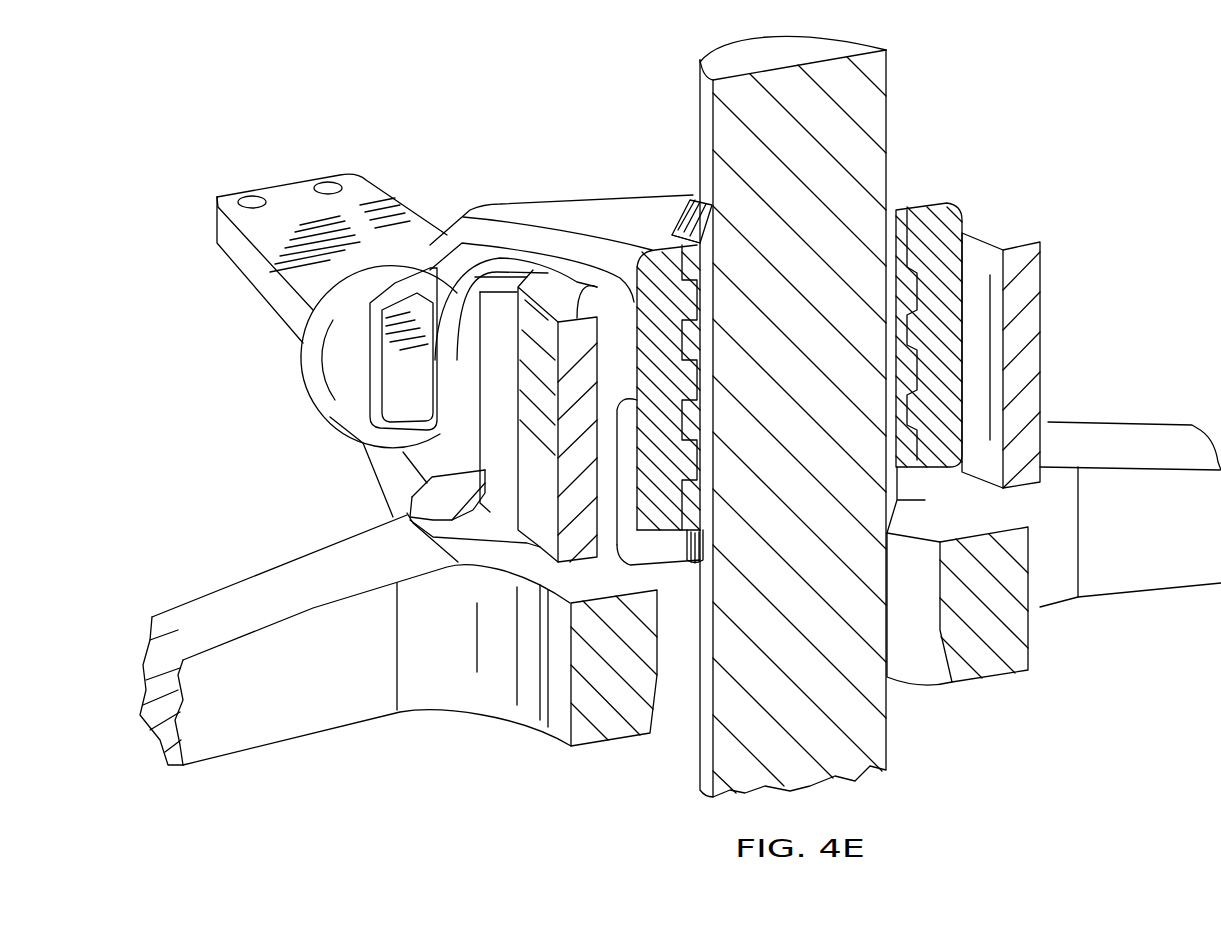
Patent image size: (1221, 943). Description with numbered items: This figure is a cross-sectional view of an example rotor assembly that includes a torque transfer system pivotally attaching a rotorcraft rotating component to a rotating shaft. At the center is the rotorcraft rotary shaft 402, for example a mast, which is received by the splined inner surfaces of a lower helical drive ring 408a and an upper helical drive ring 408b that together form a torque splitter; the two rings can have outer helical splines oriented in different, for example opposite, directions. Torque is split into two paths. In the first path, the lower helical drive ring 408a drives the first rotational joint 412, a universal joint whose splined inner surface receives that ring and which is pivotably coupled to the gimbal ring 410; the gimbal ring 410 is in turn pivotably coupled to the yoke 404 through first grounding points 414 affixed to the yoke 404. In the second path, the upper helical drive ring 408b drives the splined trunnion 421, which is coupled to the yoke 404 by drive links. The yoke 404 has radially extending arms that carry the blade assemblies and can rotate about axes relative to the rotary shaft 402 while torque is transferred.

The rotorcraft rotary shaft 402 is at (877, 693).
The yoke 404 is at (277, 193).
The lower helical drive ring 408a is at (908, 468).
The upper helical drive ring 408b is at (700, 332).
The gimbal ring 410 is at (560, 290).
The first rotational joint 412 is at (945, 470).
The first grounding points 414 is at (428, 500).
The trunnion 421 is at (610, 212).